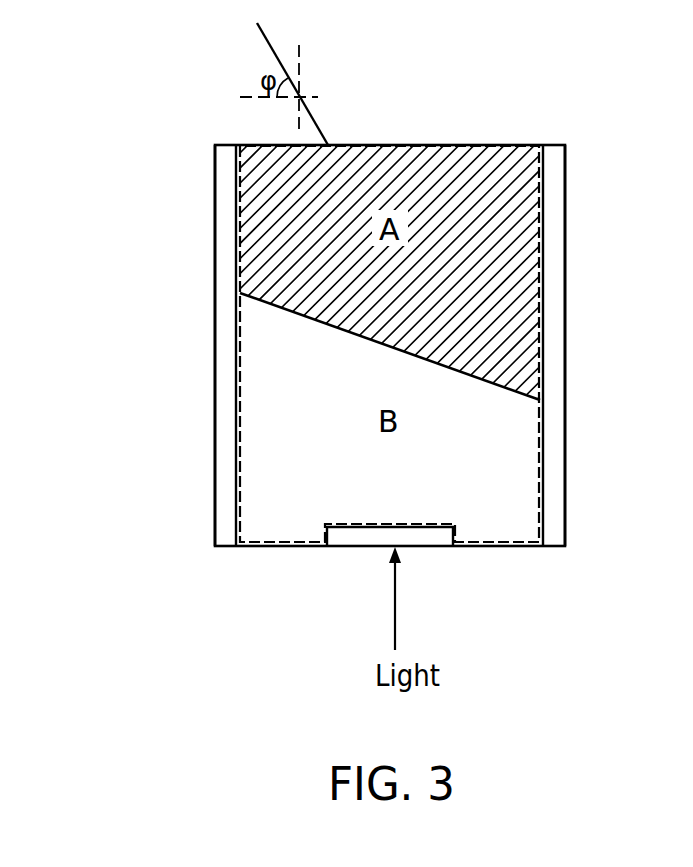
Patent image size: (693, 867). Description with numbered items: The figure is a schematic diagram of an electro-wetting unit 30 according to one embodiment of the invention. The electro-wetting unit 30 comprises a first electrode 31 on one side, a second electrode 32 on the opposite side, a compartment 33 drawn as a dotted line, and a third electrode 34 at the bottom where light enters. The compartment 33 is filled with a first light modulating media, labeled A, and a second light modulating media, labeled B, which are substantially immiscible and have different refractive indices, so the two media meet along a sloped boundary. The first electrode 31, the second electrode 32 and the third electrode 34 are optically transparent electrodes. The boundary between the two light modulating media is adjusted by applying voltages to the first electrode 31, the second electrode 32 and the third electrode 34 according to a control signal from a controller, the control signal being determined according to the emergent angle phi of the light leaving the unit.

The electro-wetting unit 30 is at (160, 130).
The first electrode 31 is at (228, 239).
The second electrode 32 is at (555, 243).
The compartment 33 is at (480, 145).
The third electrode 34 is at (420, 548).